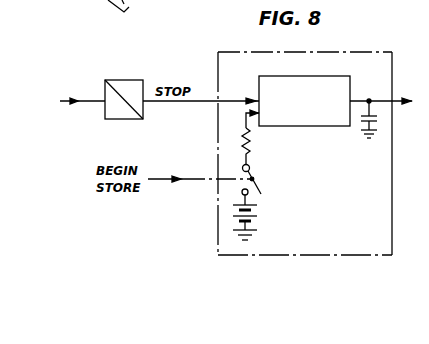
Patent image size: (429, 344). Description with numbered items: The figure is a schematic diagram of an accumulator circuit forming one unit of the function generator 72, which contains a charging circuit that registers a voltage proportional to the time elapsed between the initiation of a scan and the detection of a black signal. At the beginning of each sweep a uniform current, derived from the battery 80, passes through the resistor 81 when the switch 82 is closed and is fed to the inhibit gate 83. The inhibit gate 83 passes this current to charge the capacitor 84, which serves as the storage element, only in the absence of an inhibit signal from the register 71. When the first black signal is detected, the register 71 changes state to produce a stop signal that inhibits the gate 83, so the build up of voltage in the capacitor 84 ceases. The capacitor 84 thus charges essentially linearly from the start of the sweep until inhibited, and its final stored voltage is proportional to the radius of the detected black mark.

The register 71 is at (137, 64).
The function generator 72 is at (361, 52).
The battery 80 is at (258, 212).
The resistor 81 is at (252, 142).
The switch 82 is at (262, 190).
The inhibit gate 83 is at (319, 76).
The capacitor 84 is at (378, 118).